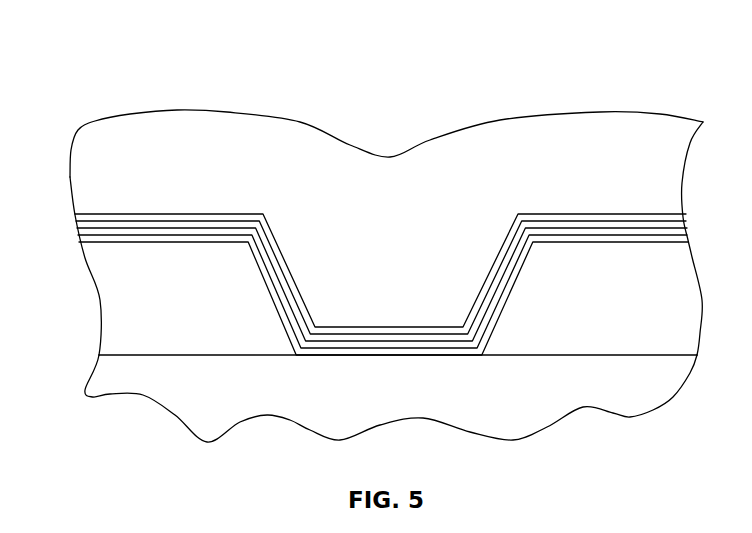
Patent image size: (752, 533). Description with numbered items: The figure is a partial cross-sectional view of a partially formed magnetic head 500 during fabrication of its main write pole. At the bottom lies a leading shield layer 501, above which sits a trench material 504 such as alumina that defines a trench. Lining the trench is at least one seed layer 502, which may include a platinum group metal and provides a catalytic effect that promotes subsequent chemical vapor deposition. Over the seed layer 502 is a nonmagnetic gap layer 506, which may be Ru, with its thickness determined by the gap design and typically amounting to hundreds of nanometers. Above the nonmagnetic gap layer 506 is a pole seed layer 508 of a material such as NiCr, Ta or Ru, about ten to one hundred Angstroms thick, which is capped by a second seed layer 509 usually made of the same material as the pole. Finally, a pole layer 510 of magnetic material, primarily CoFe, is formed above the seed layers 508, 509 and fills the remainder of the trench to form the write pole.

The partially formed magnetic head 500 is at (94, 89).
The leading shield layer 501 is at (600, 388).
The seed layer 502 is at (138, 240).
The trench material 504 is at (125, 325).
The nonmagnetic gap layer 506 is at (192, 232).
The pole seed layer 508 is at (565, 228).
The second seed layer 509 is at (617, 218).
The pole layer 510 is at (378, 197).